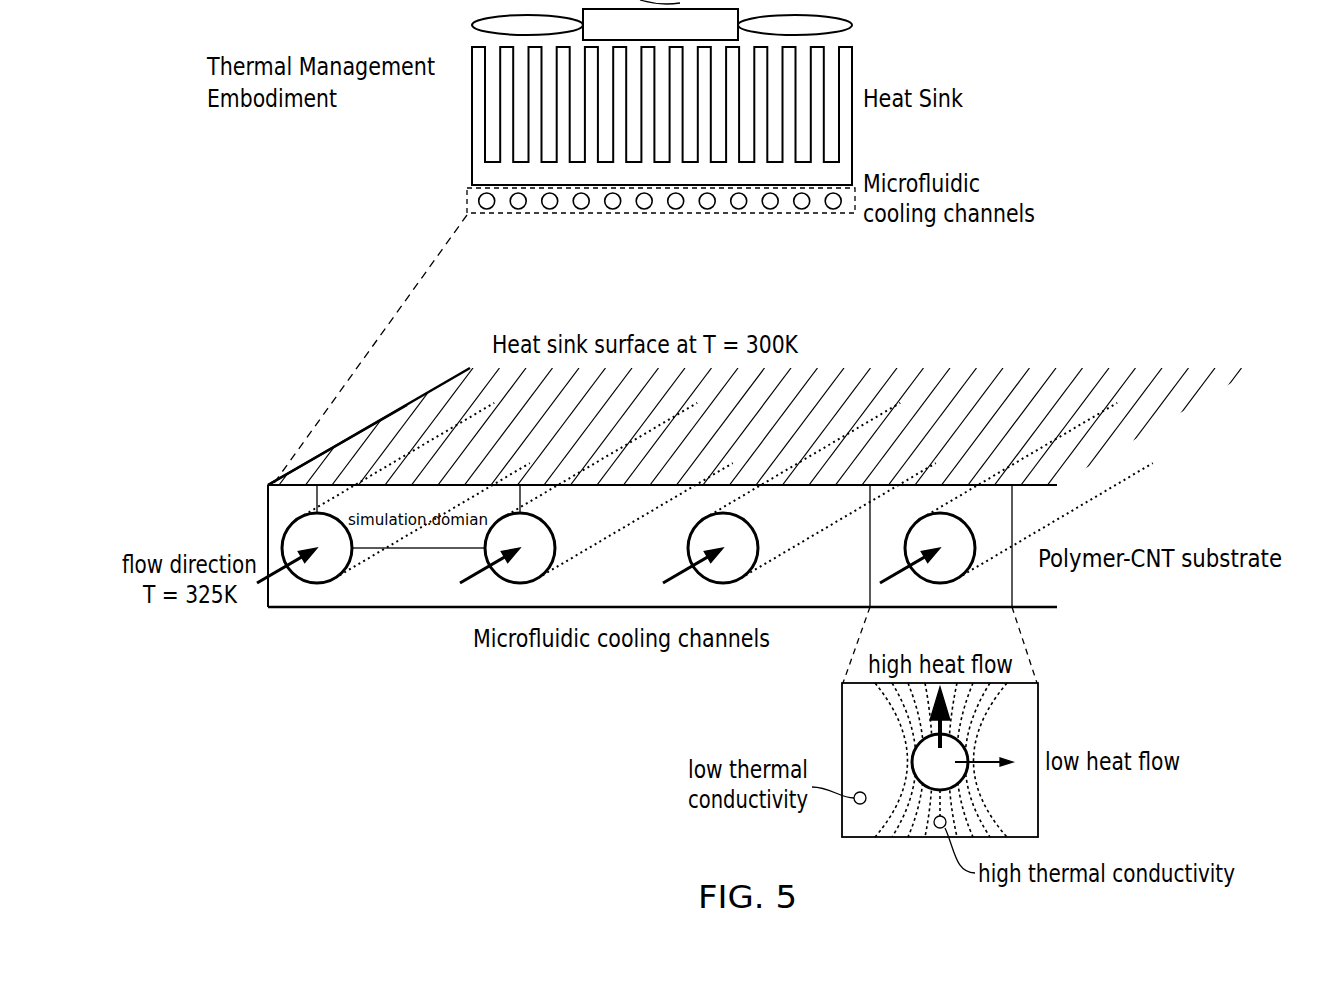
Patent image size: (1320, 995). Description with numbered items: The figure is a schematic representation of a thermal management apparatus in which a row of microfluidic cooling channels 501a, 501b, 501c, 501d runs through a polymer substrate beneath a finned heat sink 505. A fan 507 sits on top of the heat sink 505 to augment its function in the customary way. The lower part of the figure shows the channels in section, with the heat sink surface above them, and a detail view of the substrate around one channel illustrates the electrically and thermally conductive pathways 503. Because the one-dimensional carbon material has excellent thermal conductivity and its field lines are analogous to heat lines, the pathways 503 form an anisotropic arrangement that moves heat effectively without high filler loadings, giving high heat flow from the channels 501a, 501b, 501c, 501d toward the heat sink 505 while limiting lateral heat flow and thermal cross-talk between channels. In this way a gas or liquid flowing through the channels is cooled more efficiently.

The microfluidic cooling channel 501a is at (488, 211).
The microfluidic cooling channel 501b is at (518, 211).
The microfluidic cooling channel 501c is at (549, 211).
The microfluidic cooling channel 501d is at (583, 211).
The electrically and thermally conductive pathways 503 is at (1000, 720).
The heat sink 505 is at (472, 142).
The fan 507 is at (852, 28).